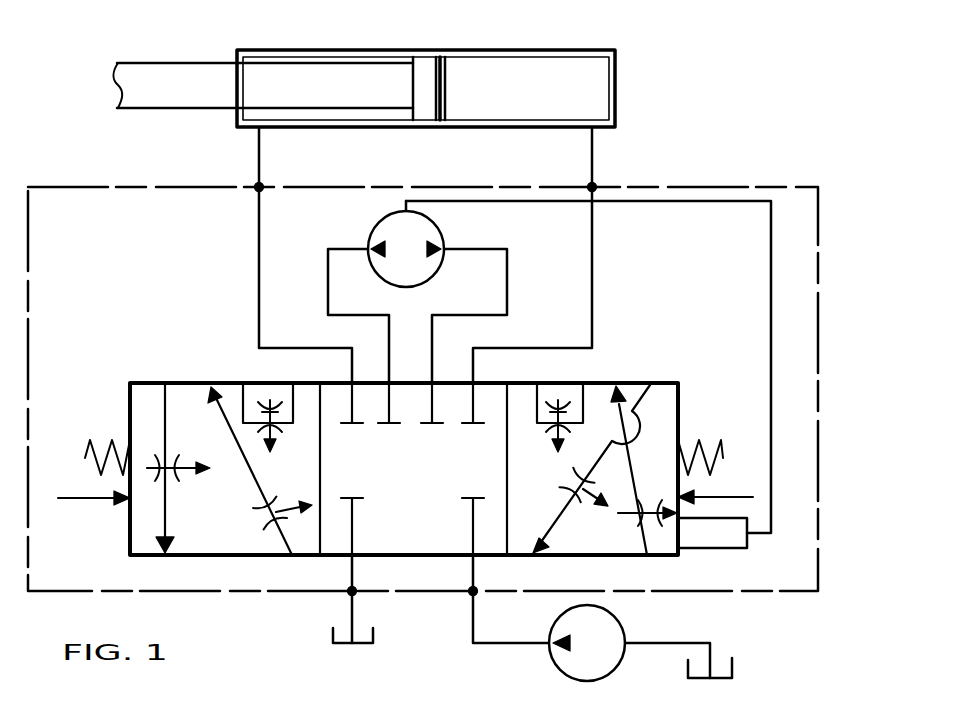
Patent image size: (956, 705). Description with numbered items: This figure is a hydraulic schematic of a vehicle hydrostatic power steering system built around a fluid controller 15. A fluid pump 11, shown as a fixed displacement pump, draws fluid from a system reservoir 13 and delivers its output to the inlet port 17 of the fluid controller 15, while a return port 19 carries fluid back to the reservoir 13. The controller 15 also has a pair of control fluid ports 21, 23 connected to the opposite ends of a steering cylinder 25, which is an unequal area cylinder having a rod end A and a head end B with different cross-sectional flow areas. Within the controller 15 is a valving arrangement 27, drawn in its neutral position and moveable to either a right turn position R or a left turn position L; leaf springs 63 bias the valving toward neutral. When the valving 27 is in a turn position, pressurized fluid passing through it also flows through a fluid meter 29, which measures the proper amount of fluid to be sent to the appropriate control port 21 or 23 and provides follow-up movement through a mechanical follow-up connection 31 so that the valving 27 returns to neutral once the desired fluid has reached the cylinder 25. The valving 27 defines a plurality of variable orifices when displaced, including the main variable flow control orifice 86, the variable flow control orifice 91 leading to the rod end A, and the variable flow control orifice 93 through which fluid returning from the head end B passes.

The fluid pump 11 is at (617, 616).
The system reservoir 13 is at (374, 628).
The fluid controller 15 is at (820, 188).
The inlet port 17 is at (471, 594).
The return port 19 is at (350, 593).
The control fluid port 21 is at (257, 187).
The control fluid port 23 is at (594, 186).
The steering cylinder 25 is at (283, 50).
The valving arrangement 27 is at (678, 383).
The fluid meter 29 is at (377, 227).
The mechanical follow-up connection 31 is at (628, 201).
The leaf springs 63 is at (118, 441).
The main variable flow control orifice 86 is at (262, 521).
The variable flow control orifice 91 is at (283, 431).
The variable flow control orifice 93 is at (173, 480).
The rod end A is at (340, 65).
The head end B is at (538, 65).
The right turn position R is at (94, 489).
The left turn position L is at (715, 488).